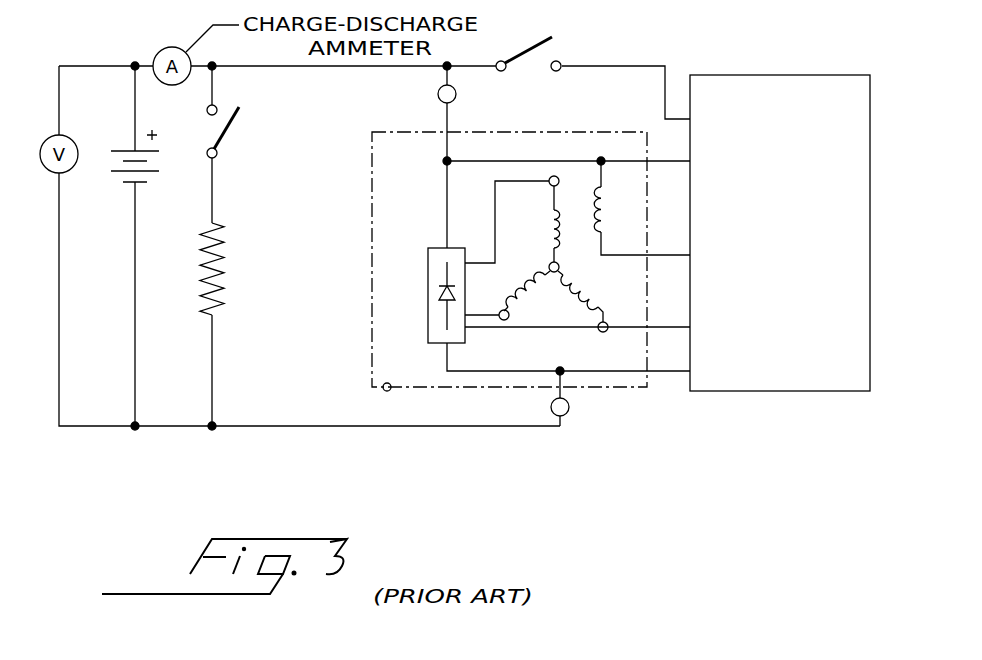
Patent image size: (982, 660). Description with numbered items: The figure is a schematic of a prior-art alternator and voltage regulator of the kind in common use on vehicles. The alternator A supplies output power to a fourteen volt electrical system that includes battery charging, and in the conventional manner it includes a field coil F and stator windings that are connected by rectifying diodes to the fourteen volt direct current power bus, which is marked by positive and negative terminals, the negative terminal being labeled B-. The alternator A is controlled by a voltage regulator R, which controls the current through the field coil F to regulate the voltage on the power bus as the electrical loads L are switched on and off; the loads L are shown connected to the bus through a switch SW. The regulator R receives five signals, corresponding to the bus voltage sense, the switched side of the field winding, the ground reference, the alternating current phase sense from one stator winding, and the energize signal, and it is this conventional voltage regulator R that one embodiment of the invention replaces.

The electrical loads L is at (224, 282).
The ignition switch SW is at (547, 53).
The negative battery terminal B- is at (573, 396).
The alternator A is at (531, 316).
The field coil F is at (604, 206).
The voltage regulator R is at (784, 391).